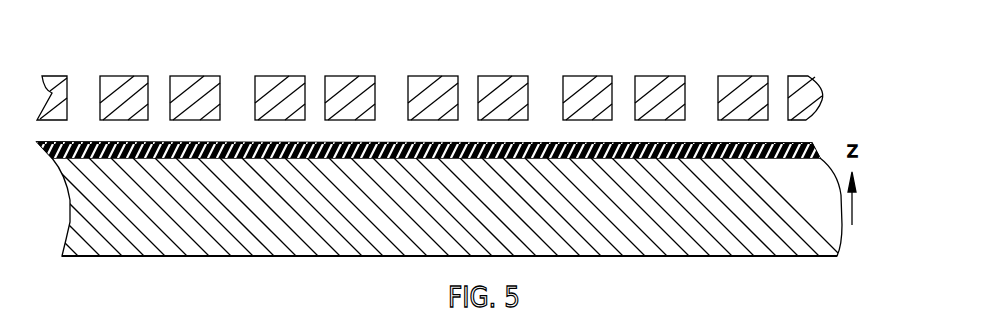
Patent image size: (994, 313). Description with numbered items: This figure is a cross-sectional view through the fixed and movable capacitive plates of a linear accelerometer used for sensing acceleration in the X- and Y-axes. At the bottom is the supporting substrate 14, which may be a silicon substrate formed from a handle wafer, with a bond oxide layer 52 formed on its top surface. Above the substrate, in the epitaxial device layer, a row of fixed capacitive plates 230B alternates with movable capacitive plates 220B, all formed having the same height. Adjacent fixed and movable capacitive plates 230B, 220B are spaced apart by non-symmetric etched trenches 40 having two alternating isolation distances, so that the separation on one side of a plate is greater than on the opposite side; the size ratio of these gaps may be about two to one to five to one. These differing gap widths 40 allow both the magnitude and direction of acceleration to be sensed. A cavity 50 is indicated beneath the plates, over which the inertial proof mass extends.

The supporting substrate 14 is at (82, 243).
The bond oxide layer 52 is at (125, 158).
The non-symmetric etched trenches 40 is at (85, 82).
The movable capacitive plate 220B is at (51, 79).
The fixed capacitive plate 230B is at (130, 79).
The cavity 50 is at (800, 132).